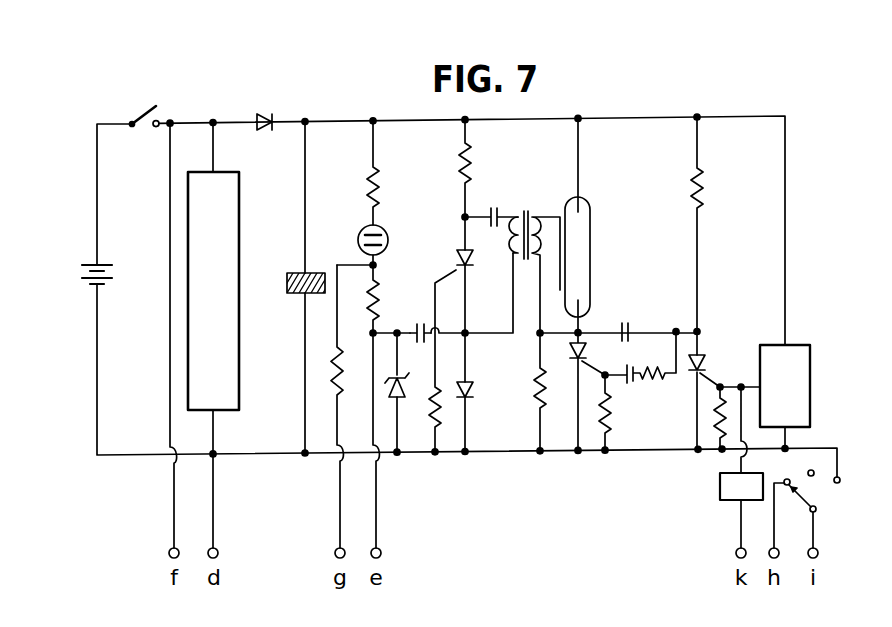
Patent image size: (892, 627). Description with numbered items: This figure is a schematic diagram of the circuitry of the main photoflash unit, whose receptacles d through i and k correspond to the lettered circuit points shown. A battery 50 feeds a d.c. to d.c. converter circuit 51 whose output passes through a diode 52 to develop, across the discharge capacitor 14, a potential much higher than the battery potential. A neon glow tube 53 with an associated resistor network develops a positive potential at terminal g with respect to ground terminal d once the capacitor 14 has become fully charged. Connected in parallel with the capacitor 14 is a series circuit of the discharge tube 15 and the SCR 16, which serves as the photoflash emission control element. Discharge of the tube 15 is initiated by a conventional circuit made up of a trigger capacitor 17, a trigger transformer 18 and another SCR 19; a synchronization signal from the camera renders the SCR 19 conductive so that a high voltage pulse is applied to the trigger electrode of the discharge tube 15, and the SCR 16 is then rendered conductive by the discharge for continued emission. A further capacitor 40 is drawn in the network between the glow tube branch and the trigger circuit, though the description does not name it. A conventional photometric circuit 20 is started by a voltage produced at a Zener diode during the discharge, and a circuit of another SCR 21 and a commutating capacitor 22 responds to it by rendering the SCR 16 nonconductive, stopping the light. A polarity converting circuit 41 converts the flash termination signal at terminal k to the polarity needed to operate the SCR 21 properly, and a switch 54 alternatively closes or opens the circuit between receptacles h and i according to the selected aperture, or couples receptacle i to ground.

The battery 50 is at (93, 263).
The diode 52 is at (256, 120).
The d.c. to d.c. converter circuit 51 is at (240, 199).
The discharge capacitor 14 is at (296, 272).
The neon glow tube 53 is at (388, 227).
The SCR 19 is at (457, 265).
The trigger capacitor 17 is at (510, 178).
The trigger transformer 18 is at (534, 208).
The discharge tube 15 is at (590, 266).
The capacitor 40 is at (419, 324).
The commutating capacitor 22 is at (647, 305).
The SCR 21 is at (707, 360).
The photometric circuit 20 is at (810, 345).
The SCR 16 is at (572, 365).
The polarity converting circuit 41 is at (720, 481).
The switch 54 is at (816, 497).